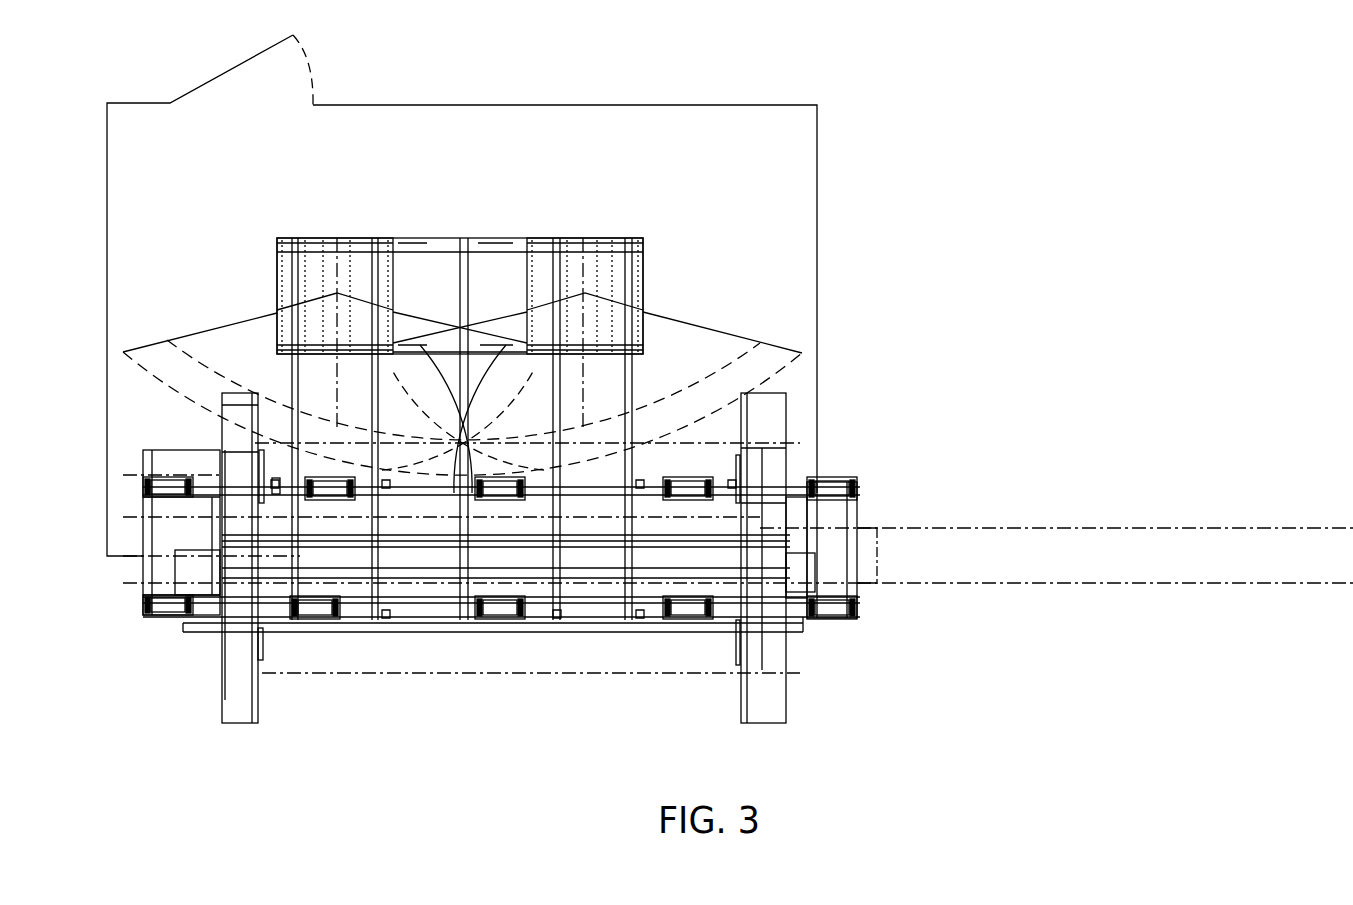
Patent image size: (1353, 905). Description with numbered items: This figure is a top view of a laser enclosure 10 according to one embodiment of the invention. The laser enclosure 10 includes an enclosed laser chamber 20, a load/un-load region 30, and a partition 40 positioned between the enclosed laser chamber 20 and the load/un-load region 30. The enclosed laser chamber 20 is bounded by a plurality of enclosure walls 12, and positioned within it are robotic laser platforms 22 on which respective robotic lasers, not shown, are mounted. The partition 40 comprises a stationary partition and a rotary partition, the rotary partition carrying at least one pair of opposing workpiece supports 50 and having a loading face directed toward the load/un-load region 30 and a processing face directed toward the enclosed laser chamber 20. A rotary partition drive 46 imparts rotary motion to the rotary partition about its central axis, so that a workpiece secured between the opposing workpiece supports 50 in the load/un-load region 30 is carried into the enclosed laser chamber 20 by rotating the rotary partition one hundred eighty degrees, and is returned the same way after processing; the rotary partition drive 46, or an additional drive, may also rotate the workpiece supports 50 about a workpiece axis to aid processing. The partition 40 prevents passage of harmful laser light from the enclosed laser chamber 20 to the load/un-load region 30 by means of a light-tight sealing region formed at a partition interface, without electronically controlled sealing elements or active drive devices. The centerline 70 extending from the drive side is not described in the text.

The laser enclosure 10 is at (875, 66).
The enclosure walls 12 is at (817, 270).
The enclosed laser chamber 20 is at (655, 193).
The robotic laser platforms 22 is at (645, 268).
The load/un-load region 30 is at (578, 751).
The partition 40 is at (478, 641).
The rotary partition drive 46 is at (162, 573).
The opposing workpiece supports 50 is at (247, 458).
The shaft centerline 70 is at (957, 583).